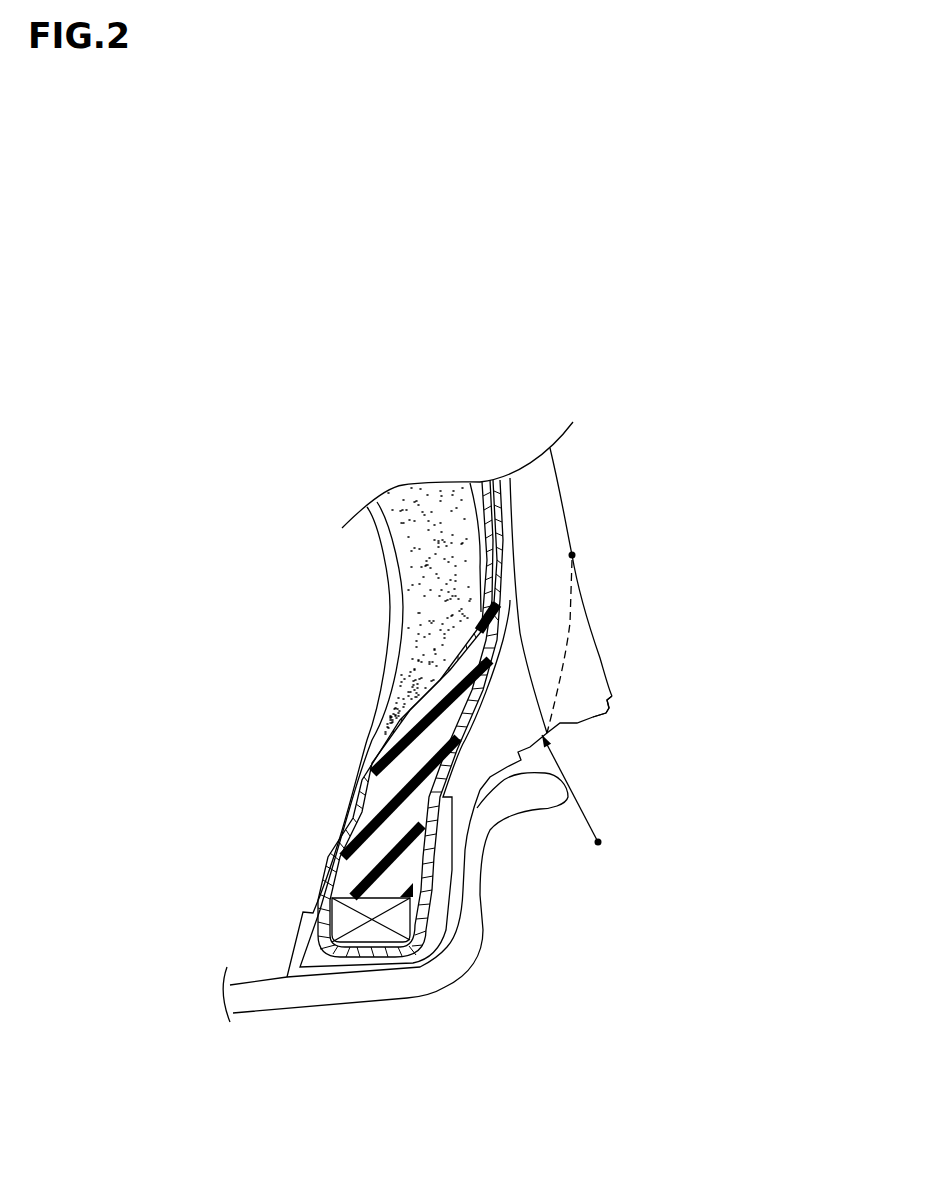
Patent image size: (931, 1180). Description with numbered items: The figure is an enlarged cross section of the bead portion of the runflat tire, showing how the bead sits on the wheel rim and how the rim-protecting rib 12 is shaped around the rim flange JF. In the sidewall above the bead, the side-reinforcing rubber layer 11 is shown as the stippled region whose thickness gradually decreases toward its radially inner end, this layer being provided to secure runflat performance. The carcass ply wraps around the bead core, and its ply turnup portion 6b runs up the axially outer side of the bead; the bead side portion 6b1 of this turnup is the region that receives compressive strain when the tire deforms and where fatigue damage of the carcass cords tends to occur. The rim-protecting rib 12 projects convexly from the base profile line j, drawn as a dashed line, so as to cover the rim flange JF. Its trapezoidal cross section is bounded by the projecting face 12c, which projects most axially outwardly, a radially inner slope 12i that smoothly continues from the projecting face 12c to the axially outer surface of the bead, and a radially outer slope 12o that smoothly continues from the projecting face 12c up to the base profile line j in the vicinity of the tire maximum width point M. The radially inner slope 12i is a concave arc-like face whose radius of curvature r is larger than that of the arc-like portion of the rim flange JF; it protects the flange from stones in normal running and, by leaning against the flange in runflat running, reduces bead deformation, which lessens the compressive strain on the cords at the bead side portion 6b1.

The side-reinforcing rubber layer 11 is at (417, 558).
The rim-protecting rib 12 is at (595, 687).
The radially outer slope 12o is at (600, 658).
The radially inner slope 12i is at (560, 727).
The projecting face 12c is at (618, 720).
The tire maximum width point M is at (572, 555).
The base profile line j is at (570, 623).
The radius of curvature r is at (590, 817).
The rim flange JF is at (385, 906).
The ply turnup portion 6b is at (358, 954).
The bead side portion 6b1 is at (535, 808).